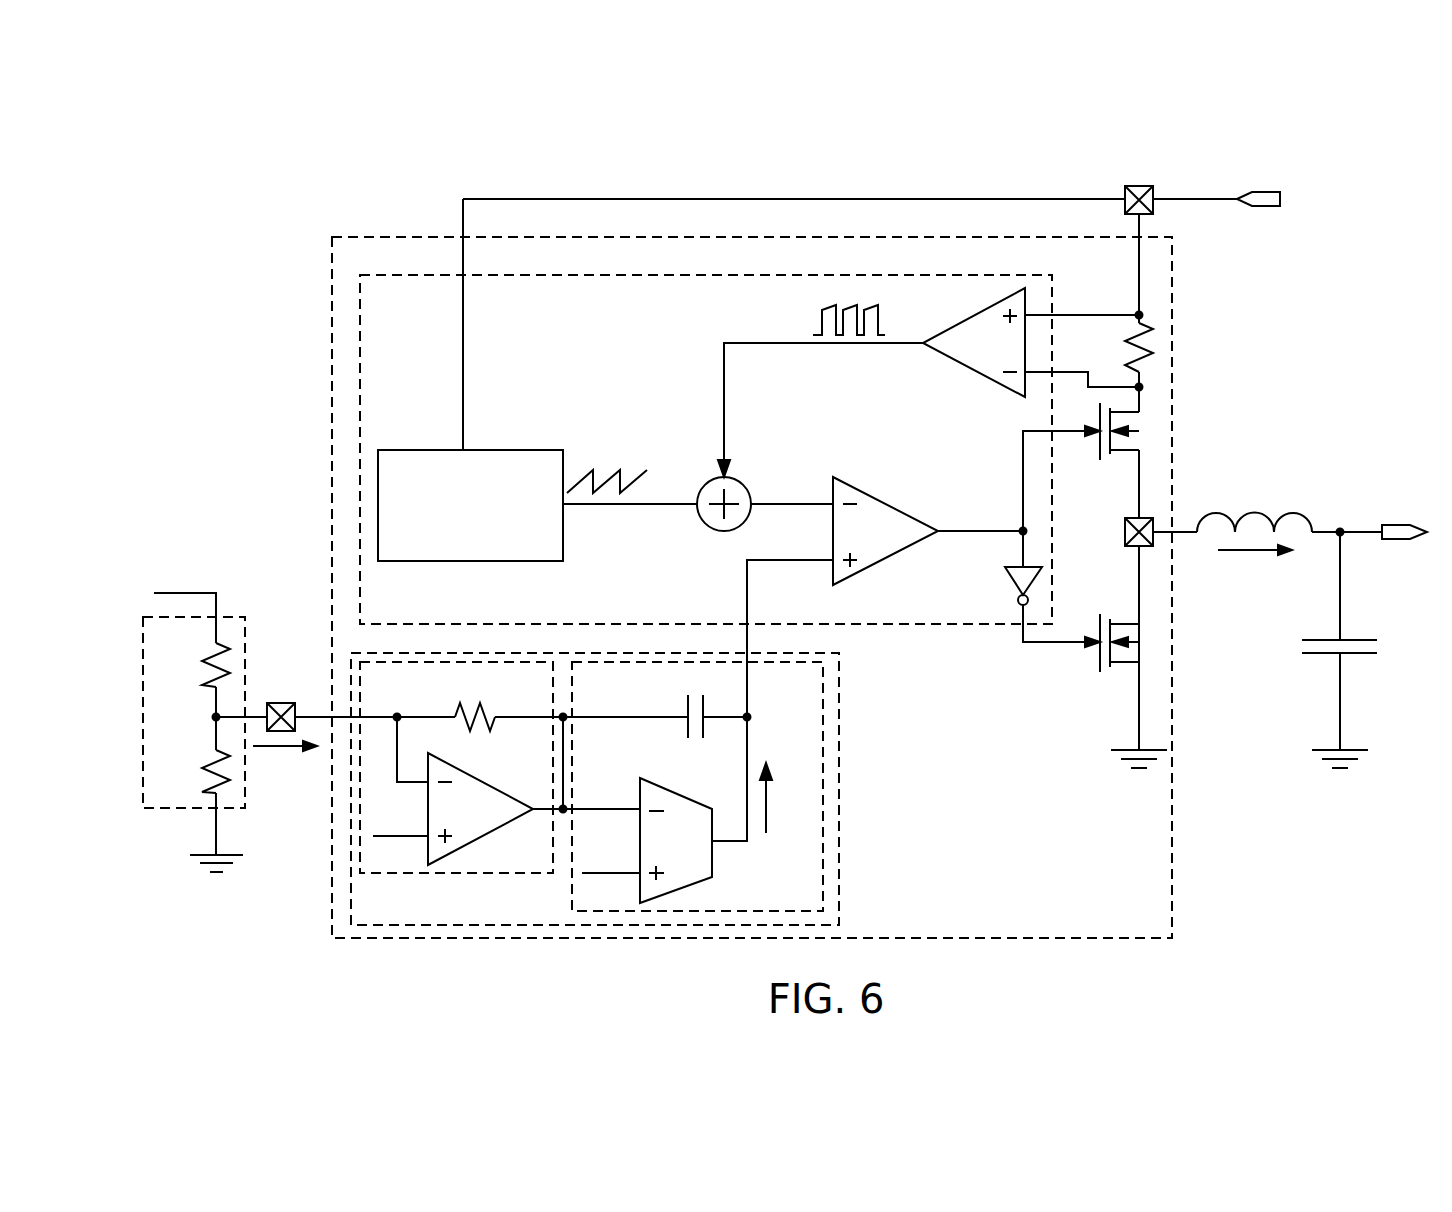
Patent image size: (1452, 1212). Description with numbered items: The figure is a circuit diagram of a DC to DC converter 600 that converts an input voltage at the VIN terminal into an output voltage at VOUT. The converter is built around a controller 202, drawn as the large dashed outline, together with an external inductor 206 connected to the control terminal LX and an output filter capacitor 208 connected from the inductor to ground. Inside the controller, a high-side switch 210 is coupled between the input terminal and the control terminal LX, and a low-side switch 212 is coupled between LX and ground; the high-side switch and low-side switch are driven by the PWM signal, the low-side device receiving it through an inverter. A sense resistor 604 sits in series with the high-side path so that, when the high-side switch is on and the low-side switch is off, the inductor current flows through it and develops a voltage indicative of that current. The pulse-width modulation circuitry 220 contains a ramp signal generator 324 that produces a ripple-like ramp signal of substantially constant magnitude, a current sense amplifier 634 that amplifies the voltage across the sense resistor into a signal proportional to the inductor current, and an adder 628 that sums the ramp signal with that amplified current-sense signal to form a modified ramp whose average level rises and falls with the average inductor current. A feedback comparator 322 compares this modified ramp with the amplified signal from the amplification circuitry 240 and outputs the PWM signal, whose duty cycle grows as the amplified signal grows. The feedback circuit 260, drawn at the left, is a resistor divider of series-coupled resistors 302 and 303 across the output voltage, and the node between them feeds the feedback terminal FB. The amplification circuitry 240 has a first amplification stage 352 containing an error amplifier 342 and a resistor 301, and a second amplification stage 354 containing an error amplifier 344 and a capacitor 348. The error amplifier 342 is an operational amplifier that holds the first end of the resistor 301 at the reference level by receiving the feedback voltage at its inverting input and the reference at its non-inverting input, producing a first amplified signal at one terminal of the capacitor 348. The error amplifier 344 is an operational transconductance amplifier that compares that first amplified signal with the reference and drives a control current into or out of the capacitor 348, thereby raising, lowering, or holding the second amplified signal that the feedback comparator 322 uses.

The DC to DC converter 600 is at (252, 207).
The controller 202 is at (332, 332).
The pulse-width modulation circuitry 220 is at (930, 275).
The ramp signal generator 324 is at (508, 450).
The adder 628 is at (707, 527).
The feedback comparator 322 is at (875, 492).
The current sense amplifier 634 is at (965, 372).
The sense resistor 604 is at (1130, 372).
The high-side switch 210 is at (1098, 442).
The low-side switch 212 is at (1095, 655).
The inductor 206 is at (1255, 515).
The capacitor 208 is at (1345, 641).
The feedback circuit 260 is at (170, 808).
The resistor 302 is at (207, 683).
The resistor 303 is at (207, 773).
The resistor 301 is at (483, 707).
The amplification circuitry 240 is at (840, 760).
The first amplification stage 352 is at (383, 873).
The second amplification stage 354 is at (573, 873).
The error amplifier 342 is at (473, 777).
The error amplifier 344 is at (665, 788).
The capacitor 348 is at (687, 705).